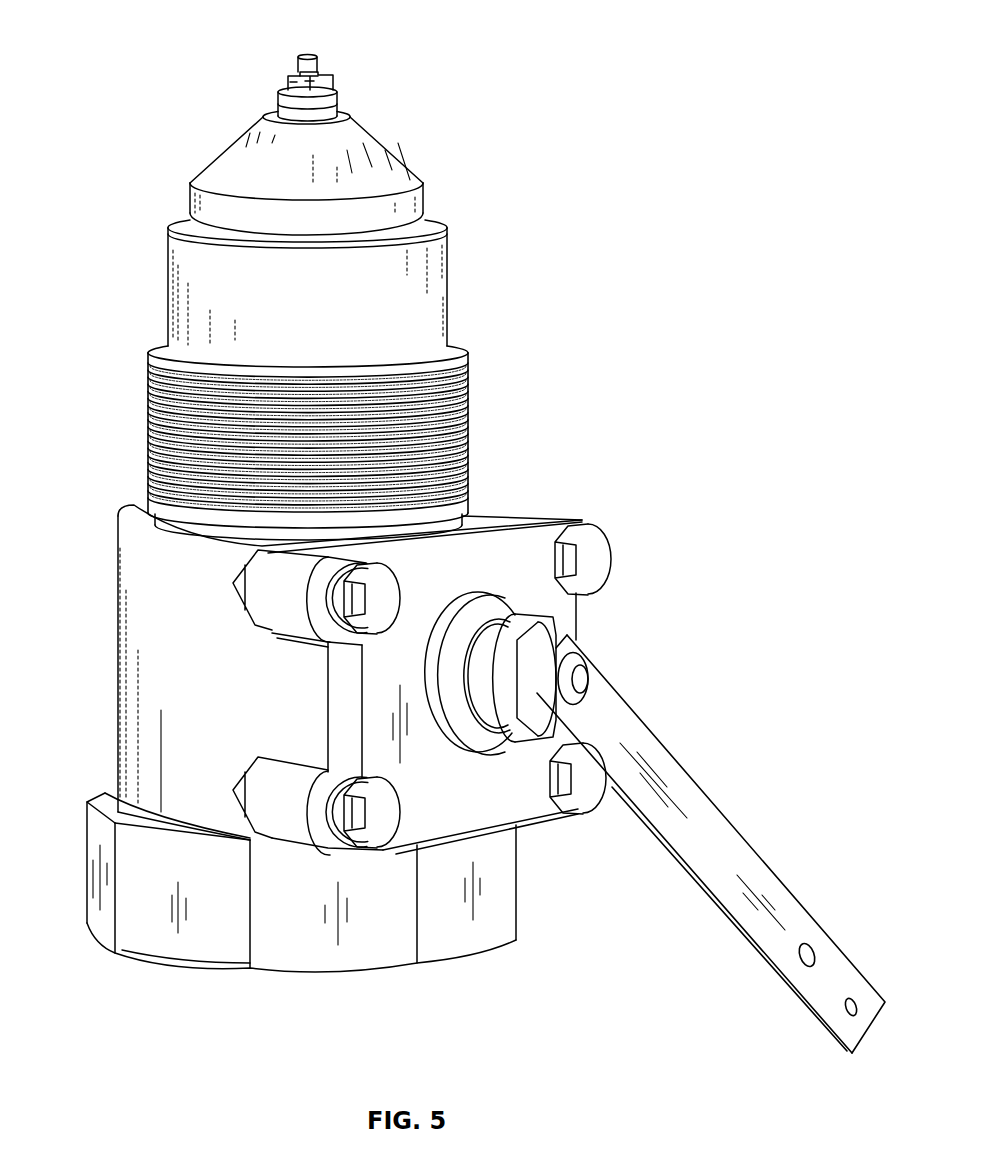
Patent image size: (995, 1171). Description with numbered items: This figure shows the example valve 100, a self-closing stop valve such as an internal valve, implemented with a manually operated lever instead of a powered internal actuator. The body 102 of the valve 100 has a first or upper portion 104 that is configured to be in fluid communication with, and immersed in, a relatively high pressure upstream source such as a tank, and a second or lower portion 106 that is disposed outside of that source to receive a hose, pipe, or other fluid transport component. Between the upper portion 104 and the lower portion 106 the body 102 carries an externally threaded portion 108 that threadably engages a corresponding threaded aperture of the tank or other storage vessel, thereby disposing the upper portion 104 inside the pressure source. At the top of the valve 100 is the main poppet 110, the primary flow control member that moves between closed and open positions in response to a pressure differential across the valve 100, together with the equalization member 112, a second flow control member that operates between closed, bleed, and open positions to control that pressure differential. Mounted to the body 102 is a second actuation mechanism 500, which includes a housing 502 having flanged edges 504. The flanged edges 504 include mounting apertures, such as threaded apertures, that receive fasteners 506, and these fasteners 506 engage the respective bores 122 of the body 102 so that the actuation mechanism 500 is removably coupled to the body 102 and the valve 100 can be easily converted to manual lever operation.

The valve 100 is at (150, 42).
The body 102 is at (117, 697).
The first or upper portion 104 is at (167, 292).
The second or lower portion 106 is at (87, 892).
The externally threaded portion 108 is at (466, 420).
The main poppet 110 is at (392, 149).
The equalization member 112 is at (338, 100).
The bores 122 is at (270, 587).
The second actuation mechanism 500 is at (698, 608).
The housing 502 is at (535, 588).
The flanged edges 504 is at (575, 519).
The fasteners 506 is at (595, 563).